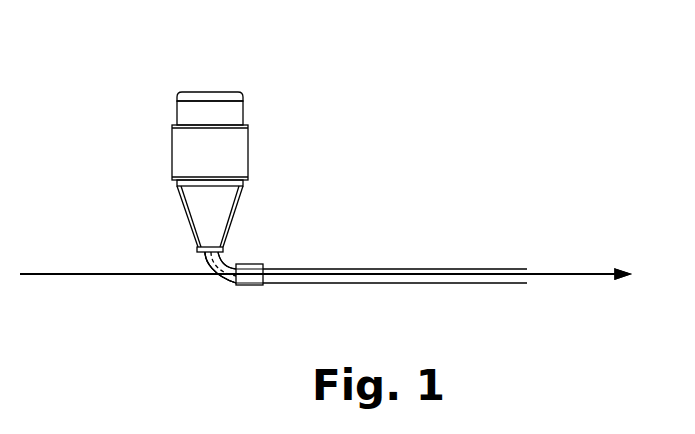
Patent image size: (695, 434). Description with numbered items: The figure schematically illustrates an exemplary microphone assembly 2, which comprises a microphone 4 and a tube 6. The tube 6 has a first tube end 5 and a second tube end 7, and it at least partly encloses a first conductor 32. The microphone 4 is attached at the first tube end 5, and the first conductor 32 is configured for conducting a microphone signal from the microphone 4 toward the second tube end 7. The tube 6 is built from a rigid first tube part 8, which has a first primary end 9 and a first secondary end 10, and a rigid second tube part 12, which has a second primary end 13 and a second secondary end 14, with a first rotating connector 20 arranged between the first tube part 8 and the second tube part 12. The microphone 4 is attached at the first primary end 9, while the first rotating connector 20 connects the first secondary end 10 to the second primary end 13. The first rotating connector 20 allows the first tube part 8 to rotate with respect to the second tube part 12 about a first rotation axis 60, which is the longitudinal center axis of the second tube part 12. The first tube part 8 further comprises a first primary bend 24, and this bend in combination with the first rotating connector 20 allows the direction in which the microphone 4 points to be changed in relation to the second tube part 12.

The microphone assembly 2 is at (104, 86).
The microphone 4 is at (249, 143).
The first tube end 5 is at (171, 219).
The first primary end 9 is at (198, 250).
The first tube part 8 is at (224, 253).
The first primary bend 24 is at (224, 277).
The first secondary end 10 is at (352, 312).
The second primary end 13 is at (352, 312).
The first rotating connector 20 is at (236, 287).
The first conductor 32 is at (458, 269).
The tube 6 is at (395, 240).
The second tube part 12 is at (388, 268).
The second tube end 7 is at (423, 241).
The second secondary end 14 is at (517, 268).
The first rotation axis 60 is at (560, 275).